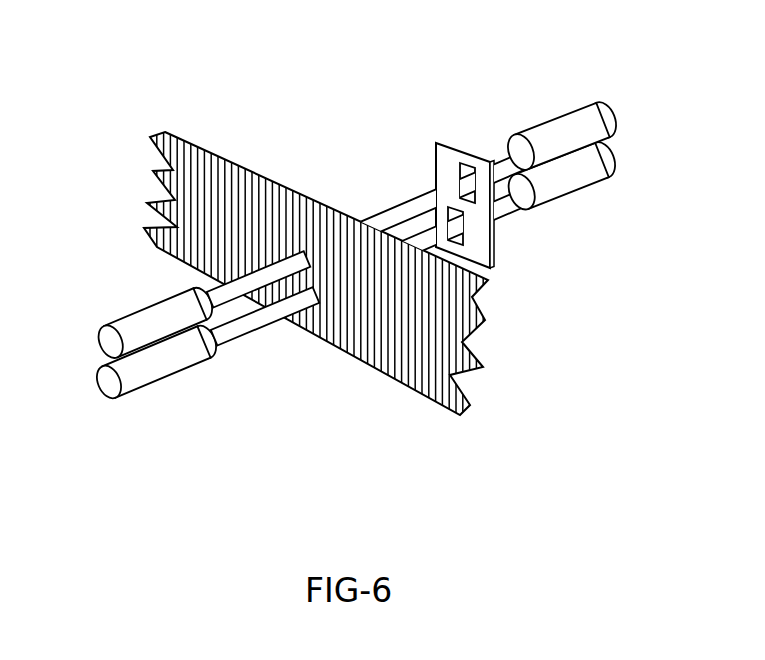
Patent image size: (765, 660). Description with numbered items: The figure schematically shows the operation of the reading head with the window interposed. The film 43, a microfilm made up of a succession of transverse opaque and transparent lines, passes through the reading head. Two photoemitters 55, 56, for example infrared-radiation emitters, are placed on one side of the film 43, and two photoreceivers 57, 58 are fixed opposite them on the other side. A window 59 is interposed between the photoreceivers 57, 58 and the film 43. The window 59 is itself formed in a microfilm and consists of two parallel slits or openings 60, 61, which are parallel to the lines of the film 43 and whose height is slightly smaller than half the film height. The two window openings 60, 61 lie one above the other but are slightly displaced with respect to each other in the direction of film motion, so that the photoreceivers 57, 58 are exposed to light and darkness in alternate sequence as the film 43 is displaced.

The film 43 is at (406, 383).
The photoemitter 55 is at (175, 362).
The photoemitter 56 is at (133, 322).
The photoreceiver 57 is at (590, 174).
The photoreceiver 58 is at (540, 132).
The window 59 is at (483, 250).
The window opening 60 is at (461, 167).
The window opening 61 is at (448, 208).